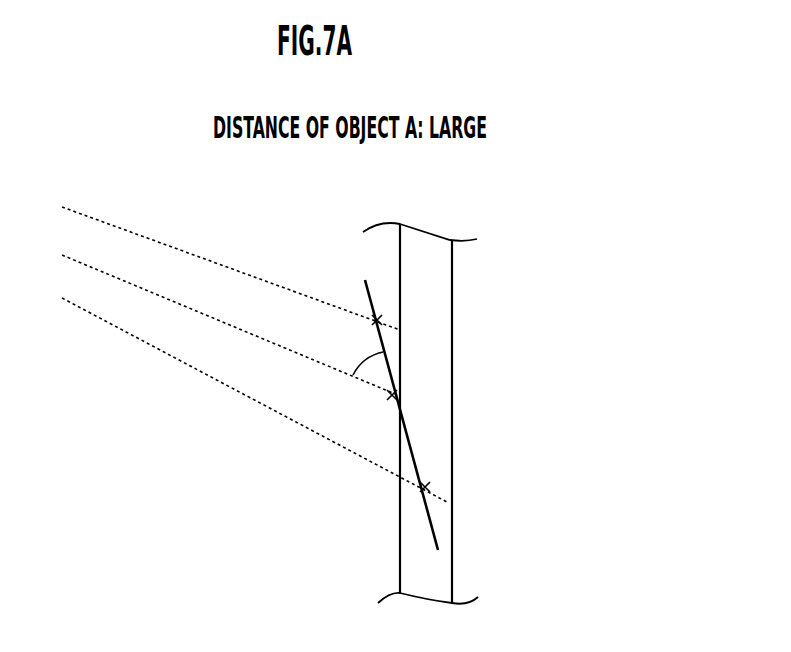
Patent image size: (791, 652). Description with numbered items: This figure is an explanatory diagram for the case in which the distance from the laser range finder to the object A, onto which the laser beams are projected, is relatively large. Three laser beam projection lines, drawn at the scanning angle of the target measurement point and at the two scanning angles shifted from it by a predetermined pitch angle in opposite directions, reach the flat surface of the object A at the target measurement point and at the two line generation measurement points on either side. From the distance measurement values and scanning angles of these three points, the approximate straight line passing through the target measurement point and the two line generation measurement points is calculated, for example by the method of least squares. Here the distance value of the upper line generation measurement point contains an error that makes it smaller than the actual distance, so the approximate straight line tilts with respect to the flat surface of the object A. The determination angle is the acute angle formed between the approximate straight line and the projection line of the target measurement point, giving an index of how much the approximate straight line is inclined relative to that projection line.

The object A is at (400, 267).